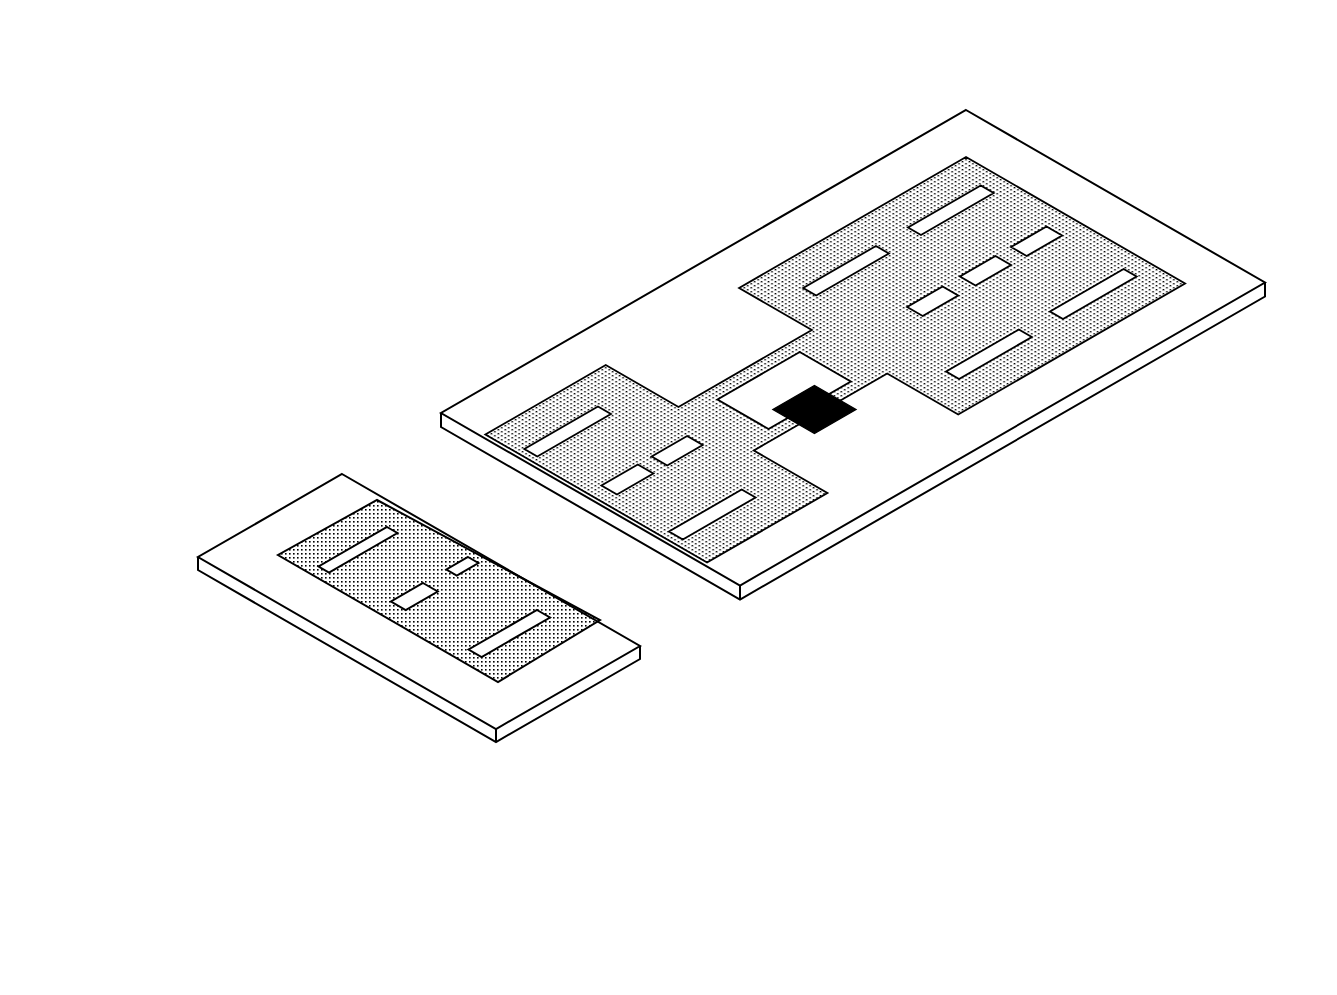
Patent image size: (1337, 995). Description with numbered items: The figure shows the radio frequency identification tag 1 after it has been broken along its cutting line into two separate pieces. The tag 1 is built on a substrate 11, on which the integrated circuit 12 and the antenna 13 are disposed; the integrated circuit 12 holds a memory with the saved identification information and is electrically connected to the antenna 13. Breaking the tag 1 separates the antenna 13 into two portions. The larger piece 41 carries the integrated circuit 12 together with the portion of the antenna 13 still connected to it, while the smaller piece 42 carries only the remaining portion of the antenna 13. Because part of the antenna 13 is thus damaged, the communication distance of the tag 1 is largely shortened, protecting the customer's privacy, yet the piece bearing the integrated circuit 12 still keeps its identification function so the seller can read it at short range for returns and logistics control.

The RFID tag 1 is at (883, 81).
The substrate 11 is at (668, 318).
The integrated circuit 12 is at (838, 420).
The antenna 13 is at (1083, 252).
The first substrate layer 41 is at (800, 205).
The second substrate layer 42 is at (313, 493).